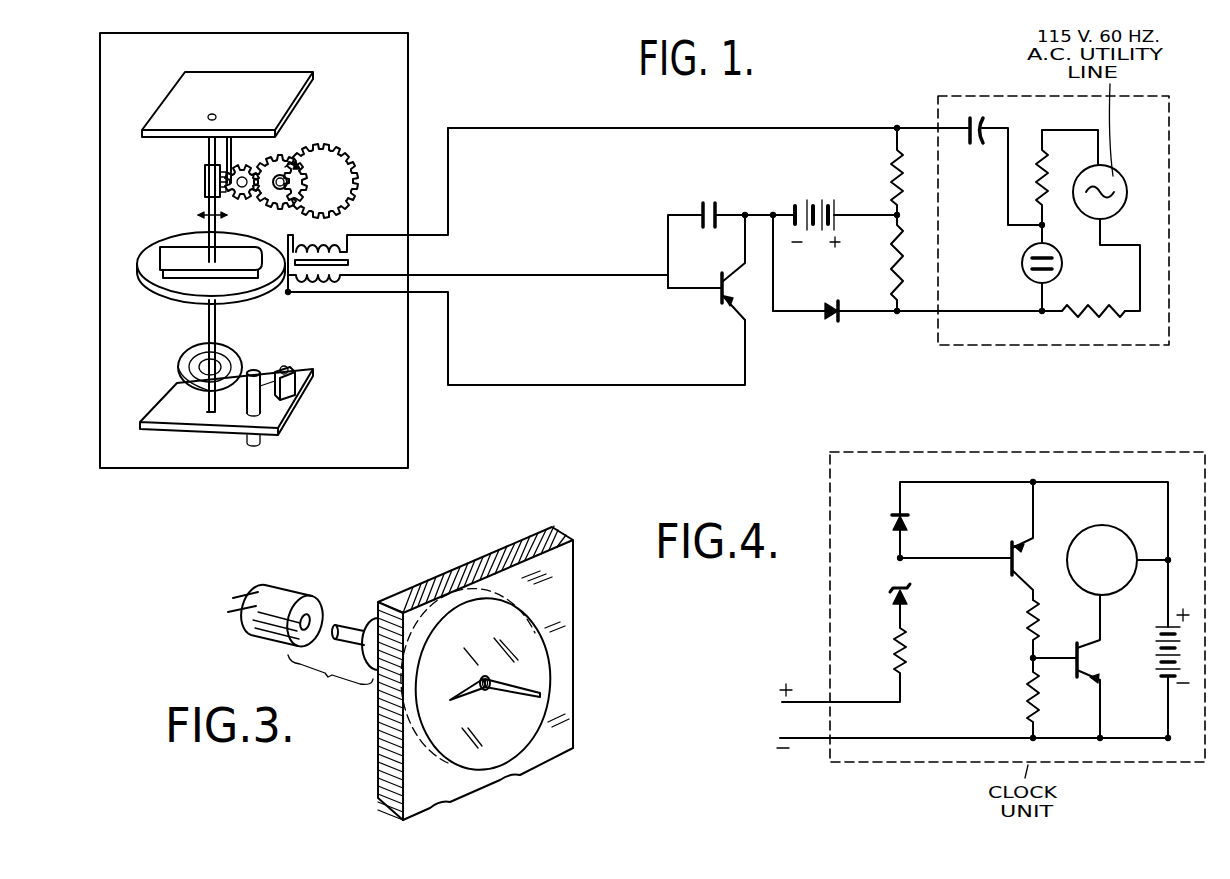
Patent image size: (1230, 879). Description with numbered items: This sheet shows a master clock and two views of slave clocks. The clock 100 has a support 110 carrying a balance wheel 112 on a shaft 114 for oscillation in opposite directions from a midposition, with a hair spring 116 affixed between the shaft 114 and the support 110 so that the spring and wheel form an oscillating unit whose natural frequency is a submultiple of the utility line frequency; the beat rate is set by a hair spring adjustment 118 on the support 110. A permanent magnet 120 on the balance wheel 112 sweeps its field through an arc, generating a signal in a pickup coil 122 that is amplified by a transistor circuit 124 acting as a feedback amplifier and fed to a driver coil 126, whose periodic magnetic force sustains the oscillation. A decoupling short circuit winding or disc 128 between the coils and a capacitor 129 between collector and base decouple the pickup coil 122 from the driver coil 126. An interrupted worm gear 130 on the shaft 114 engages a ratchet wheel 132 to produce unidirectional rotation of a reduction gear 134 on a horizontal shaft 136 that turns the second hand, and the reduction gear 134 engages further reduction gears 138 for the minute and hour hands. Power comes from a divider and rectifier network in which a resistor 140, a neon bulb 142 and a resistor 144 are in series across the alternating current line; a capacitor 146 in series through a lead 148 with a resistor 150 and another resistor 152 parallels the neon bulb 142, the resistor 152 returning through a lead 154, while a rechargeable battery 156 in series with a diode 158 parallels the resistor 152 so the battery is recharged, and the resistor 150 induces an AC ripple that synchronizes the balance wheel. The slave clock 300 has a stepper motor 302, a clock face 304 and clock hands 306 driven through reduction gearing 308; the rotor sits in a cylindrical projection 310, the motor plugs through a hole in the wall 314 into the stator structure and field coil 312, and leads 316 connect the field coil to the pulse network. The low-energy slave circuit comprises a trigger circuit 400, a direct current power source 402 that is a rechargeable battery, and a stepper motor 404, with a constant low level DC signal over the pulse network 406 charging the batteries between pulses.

In FIG. 1, the clock 100 is at (100, 350).
In FIG. 1, the support 110 is at (284, 402).
In FIG. 1, the balance wheel 112 is at (140, 265).
In FIG. 1, the shaft 114 is at (209, 318).
In FIG. 1, the hair spring 116 is at (178, 366).
In FIG. 1, the hair spring adjustment 118 is at (255, 372).
In FIG. 1, the permanent magnet 120 is at (180, 250).
In FIG. 1, the pickup coil 122 is at (333, 282).
In FIG. 1, the transistor circuit 124 is at (731, 309).
In FIG. 1, the driver coil 126 is at (333, 250).
In FIG. 1, the decoupling short circuit winding or disc 128 is at (350, 262).
In FIG. 1, the capacitor 129 is at (706, 203).
In FIG. 1, the interrupted worm gear 130 is at (205, 183).
In FIG. 1, the ratchet wheel 132 is at (233, 171).
In FIG. 1, the reduction gear 134 is at (280, 155).
In FIG. 1, the horizontal shaft 136 is at (277, 190).
In FIG. 1, the further reduction gears 138 is at (335, 163).
In FIG. 1, the resistor 140 is at (1050, 173).
In FIG. 1, the neon bulb 142 is at (1022, 256).
In FIG. 1, the resistor 144 is at (1097, 307).
In FIG. 1, the capacitor 146 is at (979, 145).
In FIG. 1, the lead 148 is at (900, 127).
In FIG. 1, the resistor 150 is at (892, 170).
In FIG. 1, the resistor 152 is at (893, 262).
In FIG. 1, the lead 154 is at (982, 310).
In FIG. 1, the rechargeable battery 156 is at (808, 205).
In FIG. 1, the diode 158 is at (833, 320).
In FIG. 3, the slave clock 300 is at (547, 663).
In FIG. 3, the stepper motor 302 is at (362, 657).
In FIG. 3, the clock face 304 is at (518, 722).
In FIG. 3, the clock hands 306 is at (540, 694).
In FIG. 3, the reduction gearing 308 is at (422, 610).
In FIG. 3, the cylindrical projection 310 is at (349, 627).
In FIG. 3, the stator structure and field coil 312 is at (292, 592).
In FIG. 3, the wall 314 is at (480, 563).
In FIG. 3, the leads 316 is at (255, 590).
In FIG. 4, the trigger circuit 400 is at (1004, 452).
In FIG. 4, the direct current power source 402 is at (1157, 657).
In FIG. 4, the stepper motor 404 is at (1105, 517).
In FIG. 4, the pulse network 406 is at (808, 745).